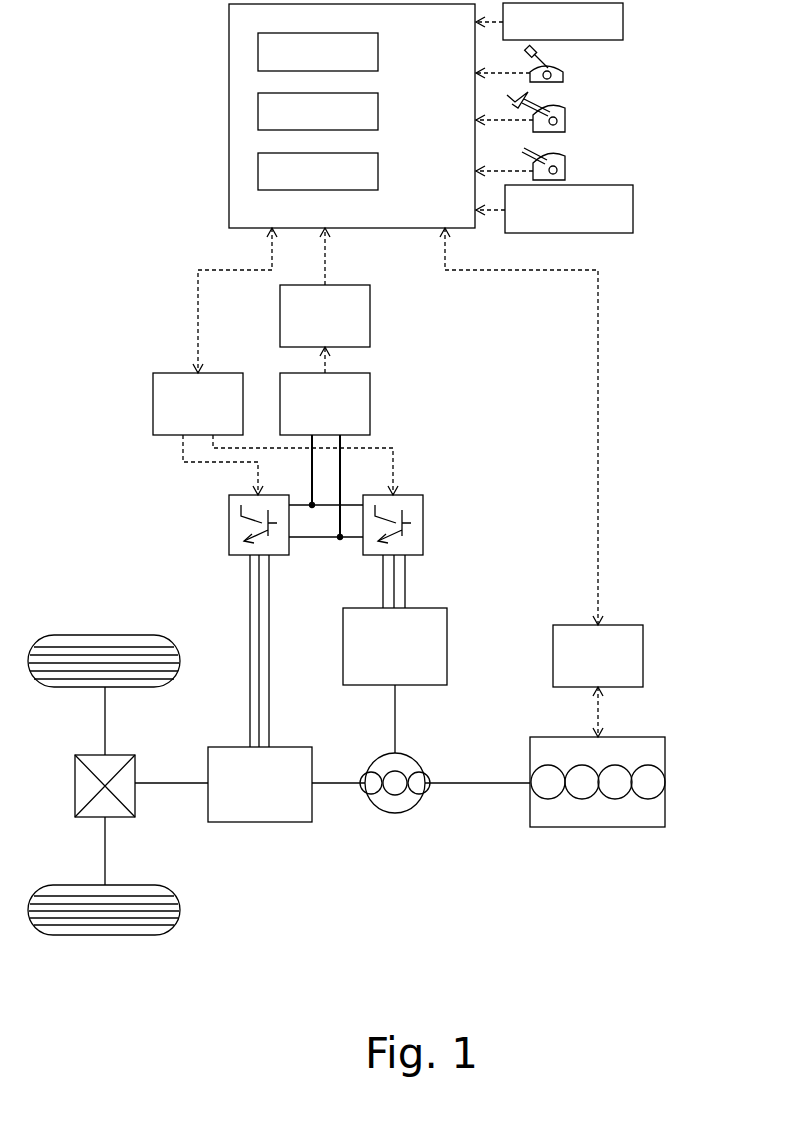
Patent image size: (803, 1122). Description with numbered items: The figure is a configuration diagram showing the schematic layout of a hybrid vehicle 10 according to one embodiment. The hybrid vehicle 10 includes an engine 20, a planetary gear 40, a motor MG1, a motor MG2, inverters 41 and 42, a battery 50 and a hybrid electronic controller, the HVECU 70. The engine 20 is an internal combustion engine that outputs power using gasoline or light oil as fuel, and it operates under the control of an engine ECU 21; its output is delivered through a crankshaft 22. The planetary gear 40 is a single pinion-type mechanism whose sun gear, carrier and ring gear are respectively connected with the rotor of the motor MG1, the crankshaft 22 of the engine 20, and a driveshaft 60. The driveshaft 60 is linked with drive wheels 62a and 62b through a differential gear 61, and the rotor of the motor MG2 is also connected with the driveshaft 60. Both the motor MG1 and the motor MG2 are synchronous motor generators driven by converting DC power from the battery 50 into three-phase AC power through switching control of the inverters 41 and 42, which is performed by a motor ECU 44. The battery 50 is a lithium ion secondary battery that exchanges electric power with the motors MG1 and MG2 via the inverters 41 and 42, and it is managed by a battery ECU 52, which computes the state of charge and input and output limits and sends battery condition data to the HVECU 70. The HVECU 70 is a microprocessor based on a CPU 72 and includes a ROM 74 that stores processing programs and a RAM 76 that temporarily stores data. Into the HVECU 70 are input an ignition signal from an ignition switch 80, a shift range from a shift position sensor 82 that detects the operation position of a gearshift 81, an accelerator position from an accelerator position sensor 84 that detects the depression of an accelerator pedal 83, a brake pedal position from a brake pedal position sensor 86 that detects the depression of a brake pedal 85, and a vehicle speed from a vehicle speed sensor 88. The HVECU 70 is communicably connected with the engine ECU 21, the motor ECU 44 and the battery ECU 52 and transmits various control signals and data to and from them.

The hybrid vehicle 10 is at (60, 125).
The engine 20 is at (667, 782).
The engine electronic controller (engine ECU) 21 is at (645, 651).
The crankshaft 22 is at (468, 790).
The planetary gear 40 is at (415, 759).
The inverter 41 is at (229, 523).
The inverter 42 is at (423, 523).
The motor electronic controller (motor ECU) 44 is at (153, 398).
The battery 50 is at (372, 402).
The battery electronic controller (battery ECU) 52 is at (372, 310).
The driveshaft 60 is at (163, 792).
The differential gear 61 is at (75, 785).
The drive wheel 62a is at (103, 635).
The drive wheel 62b is at (103, 935).
The hybrid electronic controller (HVECU) 70 is at (229, 68).
The CPU 72 is at (380, 52).
The ROM 74 is at (380, 112).
The RAM 76 is at (380, 172).
The ignition switch 80 is at (625, 22).
The gearshift 81 is at (545, 58).
The shift position sensor 82 is at (566, 75).
The accelerator pedal 83 is at (560, 100).
The accelerator position sensor 84 is at (566, 122).
The brake pedal 85 is at (560, 150).
The brake pedal position sensor 86 is at (566, 172).
The vehicle speed sensor 88 is at (634, 210).
The motor MG1 is at (450, 646).
The motor MG2 is at (250, 822).